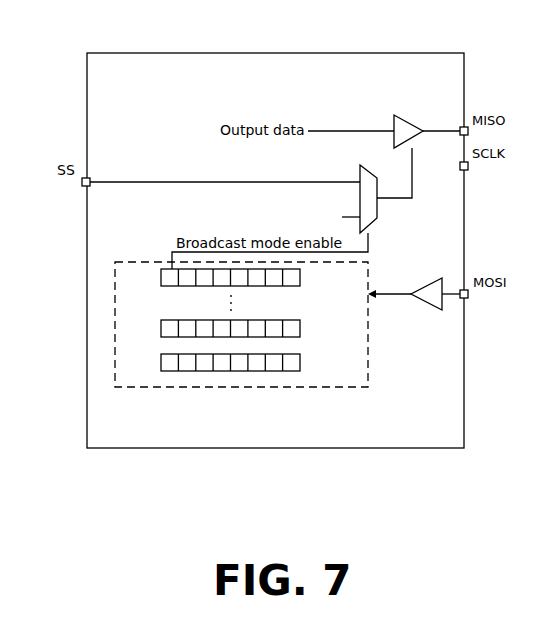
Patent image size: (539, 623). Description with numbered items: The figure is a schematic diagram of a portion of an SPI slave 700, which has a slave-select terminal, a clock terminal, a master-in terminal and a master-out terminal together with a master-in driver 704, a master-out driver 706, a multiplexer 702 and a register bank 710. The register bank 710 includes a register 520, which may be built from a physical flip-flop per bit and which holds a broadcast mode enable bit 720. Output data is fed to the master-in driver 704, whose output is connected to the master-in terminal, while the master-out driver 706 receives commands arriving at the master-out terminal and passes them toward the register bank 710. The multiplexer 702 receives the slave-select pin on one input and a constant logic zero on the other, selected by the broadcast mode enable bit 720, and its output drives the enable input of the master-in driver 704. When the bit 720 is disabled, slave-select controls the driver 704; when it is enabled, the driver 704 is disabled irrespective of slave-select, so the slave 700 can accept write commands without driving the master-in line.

The SPI slave 700 is at (75, 29).
The multiplexer 702 is at (380, 222).
The MISO driver 704 is at (406, 119).
The MOSI driver 706 is at (434, 283).
The register 520 is at (242, 316).
The register bank 710 is at (368, 325).
The broadcast mode enable bit 720 is at (166, 286).